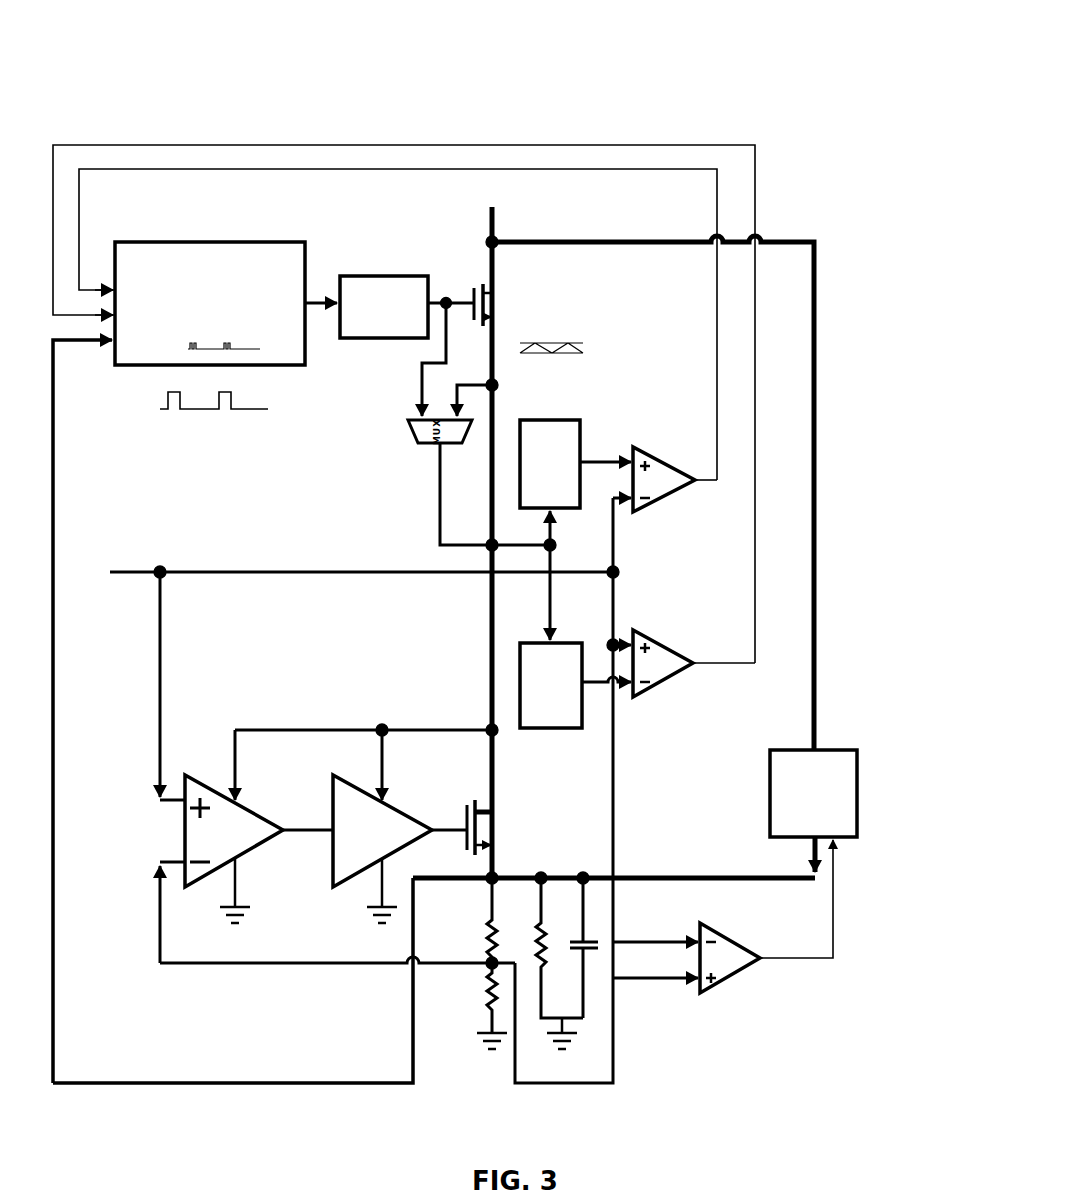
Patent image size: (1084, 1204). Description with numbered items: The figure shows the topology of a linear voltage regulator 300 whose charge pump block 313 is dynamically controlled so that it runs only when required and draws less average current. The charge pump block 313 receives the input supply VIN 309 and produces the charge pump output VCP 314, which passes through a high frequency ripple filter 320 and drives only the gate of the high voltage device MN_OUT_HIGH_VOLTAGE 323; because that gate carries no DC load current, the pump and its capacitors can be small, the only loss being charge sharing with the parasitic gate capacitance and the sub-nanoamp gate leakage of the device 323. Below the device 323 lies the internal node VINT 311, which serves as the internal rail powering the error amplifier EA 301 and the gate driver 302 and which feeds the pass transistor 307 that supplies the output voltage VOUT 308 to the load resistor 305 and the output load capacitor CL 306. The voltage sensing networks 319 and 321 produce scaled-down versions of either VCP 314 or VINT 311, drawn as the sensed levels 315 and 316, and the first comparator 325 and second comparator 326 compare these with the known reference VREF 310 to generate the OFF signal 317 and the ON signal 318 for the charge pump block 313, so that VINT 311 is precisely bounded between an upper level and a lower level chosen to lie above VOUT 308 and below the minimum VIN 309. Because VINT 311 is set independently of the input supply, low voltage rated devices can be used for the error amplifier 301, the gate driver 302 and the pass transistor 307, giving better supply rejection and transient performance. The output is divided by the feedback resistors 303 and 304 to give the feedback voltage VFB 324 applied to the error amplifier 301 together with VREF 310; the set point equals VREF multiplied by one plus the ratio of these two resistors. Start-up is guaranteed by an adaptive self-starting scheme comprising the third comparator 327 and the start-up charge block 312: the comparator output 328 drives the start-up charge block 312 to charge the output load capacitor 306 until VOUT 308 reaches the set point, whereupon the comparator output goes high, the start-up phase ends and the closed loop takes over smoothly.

The linear voltage regulator 300 is at (868, 125).
The error amplifier 301 is at (200, 774).
The gate driver 302 is at (330, 792).
The resistor R2 303 is at (478, 920).
The resistor R1 304 is at (478, 1006).
The load resistor RL 305 is at (533, 925).
The output load capacitor 306 is at (604, 947).
The pass transistor 307 is at (503, 823).
The output voltage 308 is at (684, 869).
The input supply 309 is at (504, 235).
The reference voltage 310 is at (172, 562).
The internal node 311 is at (378, 718).
The start-up charge block 312 is at (861, 795).
The charge pump block 313 is at (194, 240).
The charge pump output 314 is at (448, 274).
The alpha VH signal line 315 is at (596, 440).
The beta VL signal line 316 is at (594, 660).
The OFF charge pump signal 317 is at (712, 490).
The ON charge pump signal 318 is at (749, 670).
The voltage sensing network 319 is at (558, 416).
The high frequency ripple filter 320 is at (371, 274).
The voltage sensing network 321 is at (540, 640).
The high voltage output device MN_OUT_HIGH_VOLTAGE 323 is at (502, 292).
The feedback voltage VFB node 324 is at (304, 969).
The comparator CMP1 325 is at (686, 453).
The comparator CMP2 326 is at (684, 647).
The comparator CMP3 327 is at (750, 974).
The comparator CMP3 output line 328 is at (835, 962).